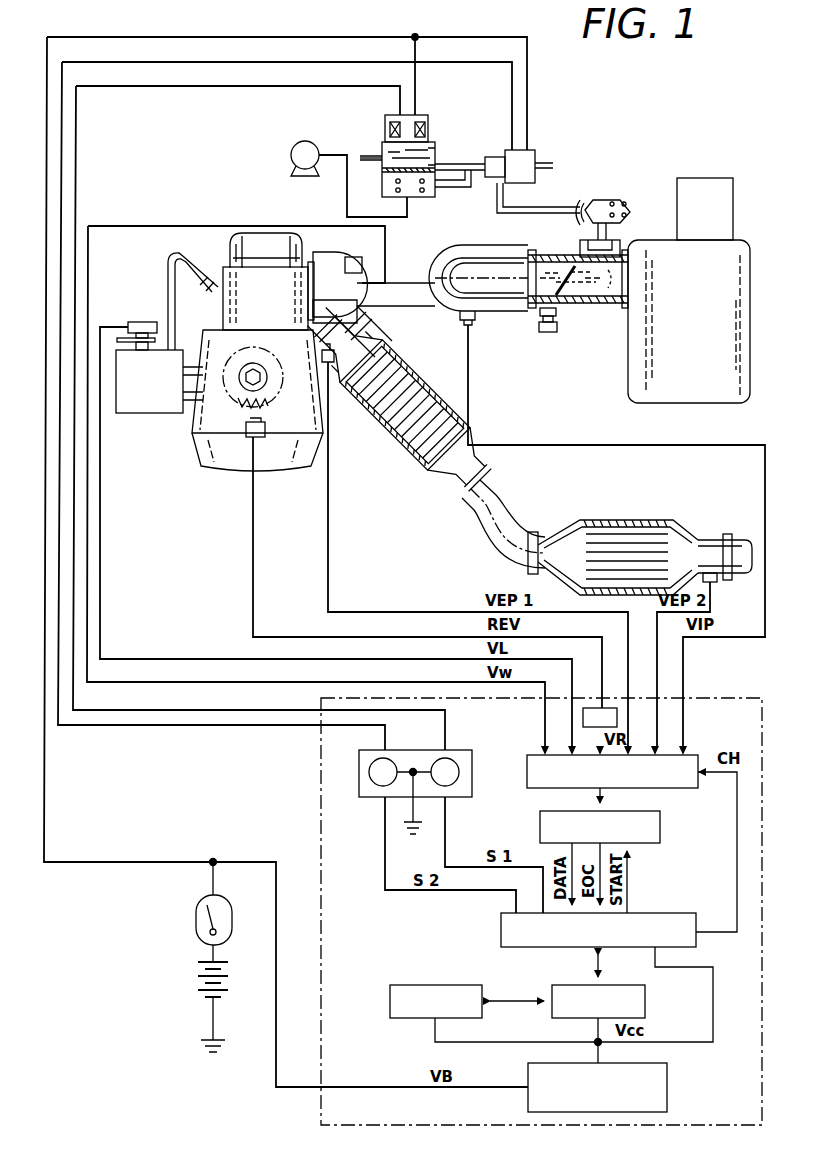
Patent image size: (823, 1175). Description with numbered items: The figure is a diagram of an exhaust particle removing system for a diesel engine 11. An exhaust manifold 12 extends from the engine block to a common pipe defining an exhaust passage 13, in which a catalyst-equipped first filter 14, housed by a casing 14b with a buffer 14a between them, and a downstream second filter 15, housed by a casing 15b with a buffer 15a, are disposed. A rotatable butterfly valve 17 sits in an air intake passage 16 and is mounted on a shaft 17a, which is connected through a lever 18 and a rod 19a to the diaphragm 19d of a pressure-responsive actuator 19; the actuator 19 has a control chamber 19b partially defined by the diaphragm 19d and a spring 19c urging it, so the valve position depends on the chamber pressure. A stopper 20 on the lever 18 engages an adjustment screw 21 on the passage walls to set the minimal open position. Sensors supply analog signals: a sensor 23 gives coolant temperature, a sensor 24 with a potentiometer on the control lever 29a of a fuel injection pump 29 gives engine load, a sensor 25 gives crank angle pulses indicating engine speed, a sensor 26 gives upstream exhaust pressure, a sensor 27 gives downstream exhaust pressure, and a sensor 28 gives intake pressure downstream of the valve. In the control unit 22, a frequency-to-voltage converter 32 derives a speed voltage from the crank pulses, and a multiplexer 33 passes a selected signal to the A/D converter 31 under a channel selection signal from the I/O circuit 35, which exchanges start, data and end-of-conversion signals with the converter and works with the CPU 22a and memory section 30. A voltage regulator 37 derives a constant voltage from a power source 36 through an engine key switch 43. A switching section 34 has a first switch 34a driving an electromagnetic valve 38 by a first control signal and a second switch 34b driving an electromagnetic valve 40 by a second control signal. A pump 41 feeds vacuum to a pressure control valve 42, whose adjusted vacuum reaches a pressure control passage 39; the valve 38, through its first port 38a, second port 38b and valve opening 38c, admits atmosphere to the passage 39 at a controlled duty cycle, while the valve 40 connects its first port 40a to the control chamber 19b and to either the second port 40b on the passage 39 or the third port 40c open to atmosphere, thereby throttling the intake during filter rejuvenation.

The diesel engine 11 is at (235, 248).
The exhaust manifold 12 is at (351, 308).
The exhaust passage 13 is at (479, 521).
The first filter 14 is at (398, 398).
The buffer 14a is at (338, 338).
The casing 14b is at (411, 357).
The second filter 15 is at (645, 536).
The buffer 15a is at (628, 524).
The casing 15b is at (656, 527).
The air intake passage 16 is at (540, 302).
The butterfly valve 17 is at (562, 288).
The shaft 17a is at (590, 288).
The lever 18 is at (608, 300).
The pressure-responsive actuator 19 is at (621, 198).
The rod 19a is at (620, 242).
The control chamber 19b is at (594, 204).
The spring 19c is at (621, 198).
The diaphragm 19d is at (578, 210).
The stopper 20 is at (553, 272).
The adjustment screw 21 is at (540, 330).
The control unit 22 is at (321, 740).
The central processing unit 22a is at (645, 1000).
The sensor 23 is at (348, 283).
The sensor 24 is at (147, 322).
The sensor 25 is at (251, 440).
The sensor 26 is at (331, 366).
The sensor 27 is at (715, 583).
The sensor 28 is at (477, 325).
The fuel injection pump 29 is at (170, 413).
The control lever 29a is at (126, 338).
The memory section 30 is at (390, 1000).
The analog-to-digital converter 31 is at (660, 828).
The frequency-to-voltage converter 32 is at (583, 718).
The multiplexer 33 is at (695, 755).
The switching section 34 is at (427, 794).
The first switch 34a is at (450, 787).
The second switch 34b is at (380, 787).
The input/output circuit 35 is at (682, 913).
The electrical power source 36 is at (198, 985).
The voltage regulator 37 is at (667, 1101).
The electromagnetic valve 38 is at (406, 139).
The first port 38a is at (443, 158).
The second port 38b is at (366, 152).
The valve opening 38c is at (428, 122).
The pressure control passage 39 is at (464, 164).
The electromagnetic valve 40 is at (538, 163).
The first port 40a is at (500, 195).
The second port 40b is at (480, 164).
The third port 40c is at (553, 165).
The pump 41 is at (297, 145).
The pressure control valve 42 is at (386, 183).
The engine key switch 43 is at (196, 925).